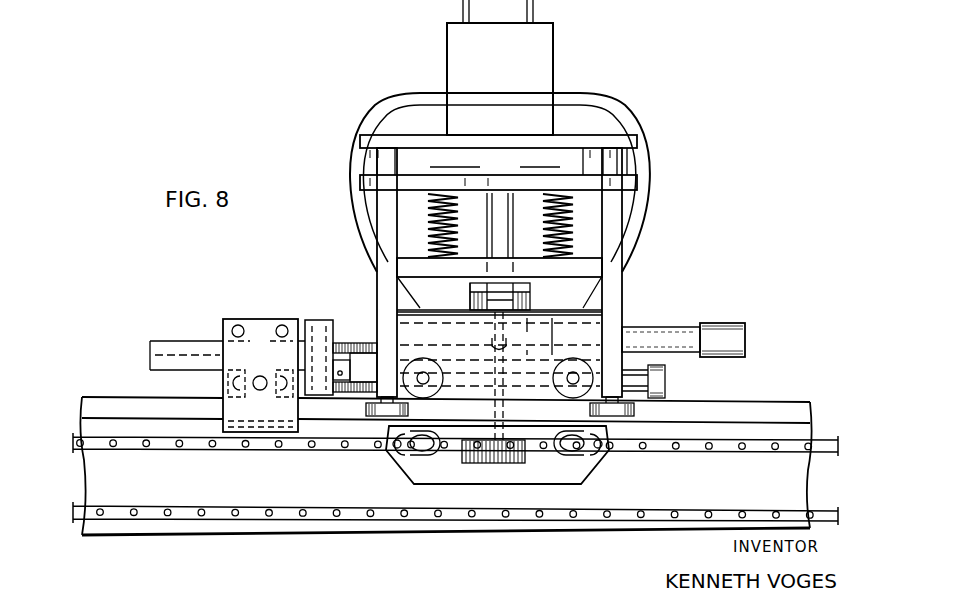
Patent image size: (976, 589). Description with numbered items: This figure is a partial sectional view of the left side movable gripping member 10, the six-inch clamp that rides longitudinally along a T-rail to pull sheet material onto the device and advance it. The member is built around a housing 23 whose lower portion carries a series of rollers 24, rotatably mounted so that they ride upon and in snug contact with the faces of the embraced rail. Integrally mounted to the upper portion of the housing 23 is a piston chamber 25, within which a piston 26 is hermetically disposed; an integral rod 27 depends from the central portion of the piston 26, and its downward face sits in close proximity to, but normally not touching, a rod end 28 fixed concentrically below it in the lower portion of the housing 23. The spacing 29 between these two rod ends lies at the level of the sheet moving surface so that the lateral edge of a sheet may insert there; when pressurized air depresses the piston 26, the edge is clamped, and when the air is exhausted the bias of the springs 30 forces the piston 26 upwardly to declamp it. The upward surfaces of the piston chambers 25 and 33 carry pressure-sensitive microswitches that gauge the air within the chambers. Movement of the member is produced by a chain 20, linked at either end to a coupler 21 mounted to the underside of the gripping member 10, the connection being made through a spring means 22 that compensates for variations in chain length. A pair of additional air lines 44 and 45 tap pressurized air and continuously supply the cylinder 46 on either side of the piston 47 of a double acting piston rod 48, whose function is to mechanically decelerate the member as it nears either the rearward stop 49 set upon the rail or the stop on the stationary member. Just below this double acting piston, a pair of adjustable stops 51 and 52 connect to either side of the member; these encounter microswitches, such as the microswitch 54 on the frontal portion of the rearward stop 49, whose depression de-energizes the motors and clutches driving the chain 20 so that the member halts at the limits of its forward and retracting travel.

The movable gripping member 10 is at (668, 268).
The chain 20 is at (327, 521).
The coupler 21 is at (584, 483).
The spring means 22 is at (480, 464).
The housing 23 is at (623, 306).
The rollers 24 is at (446, 380).
The piston chamber 25 is at (613, 138).
The piston 26 is at (555, 157).
The rod 27 is at (510, 250).
The rod end 28 is at (505, 305).
The spacing 29 is at (482, 292).
The springs 30 is at (449, 235).
The piston chamber 33 is at (553, 33).
The air line 44 is at (380, 98).
The air line 45 is at (657, 177).
The cylinder 46 is at (604, 316).
The piston 47 is at (522, 376).
The double acting piston rod 48 is at (336, 320).
The rearward stop 49 is at (230, 319).
The adjustable stop 51 is at (344, 364).
The adjustable stop 52 is at (666, 372).
The microswitch 54 is at (338, 371).